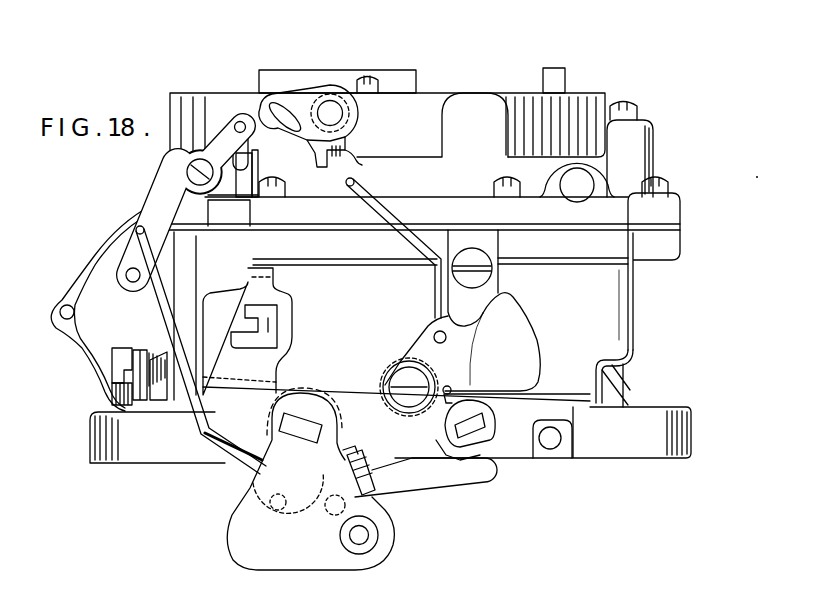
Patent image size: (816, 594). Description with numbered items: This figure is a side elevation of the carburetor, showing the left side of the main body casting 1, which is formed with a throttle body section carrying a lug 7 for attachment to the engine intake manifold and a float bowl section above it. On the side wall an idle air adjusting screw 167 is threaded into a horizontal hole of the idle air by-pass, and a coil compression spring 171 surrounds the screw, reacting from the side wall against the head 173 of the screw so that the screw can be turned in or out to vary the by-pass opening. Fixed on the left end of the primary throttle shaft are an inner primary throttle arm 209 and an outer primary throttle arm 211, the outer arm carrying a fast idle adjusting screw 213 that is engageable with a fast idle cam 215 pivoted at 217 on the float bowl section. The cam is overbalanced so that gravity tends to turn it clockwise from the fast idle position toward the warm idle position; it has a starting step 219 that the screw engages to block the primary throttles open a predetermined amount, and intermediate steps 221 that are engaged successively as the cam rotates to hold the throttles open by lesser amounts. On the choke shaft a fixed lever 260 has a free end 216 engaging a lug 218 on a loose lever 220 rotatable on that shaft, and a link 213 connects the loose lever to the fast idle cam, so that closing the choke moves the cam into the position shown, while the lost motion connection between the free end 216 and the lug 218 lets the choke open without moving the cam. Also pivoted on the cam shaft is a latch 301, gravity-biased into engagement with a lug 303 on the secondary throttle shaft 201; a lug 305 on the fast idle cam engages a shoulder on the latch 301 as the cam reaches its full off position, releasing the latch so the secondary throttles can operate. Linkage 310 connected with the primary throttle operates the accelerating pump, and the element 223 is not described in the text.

The main body casting 1 is at (632, 346).
The lug 7 is at (668, 408).
The idle air adjusting screw 167 is at (150, 356).
The coil compression spring 171 is at (131, 352).
The head 173 is at (114, 397).
The secondary throttle shaft 201 is at (481, 422).
The inner primary throttle arm 209 is at (291, 330).
The outer primary throttle arm 211 is at (228, 522).
The fast idle adjusting screw 213 is at (398, 224).
The fast idle cam 215 is at (338, 114).
The free end 216 is at (362, 165).
The pivot 217 is at (405, 352).
The lug 218 is at (320, 167).
The starting step 219 is at (375, 399).
The loose lever 220 is at (333, 96).
The intermediate steps 221 is at (409, 466).
The retaining clip 223 is at (446, 463).
The fixed lever 260 is at (355, 127).
The latch 301 is at (480, 480).
The lug 303 is at (458, 456).
The lug 305 is at (450, 388).
The accelerating pump linkage 310 is at (145, 191).